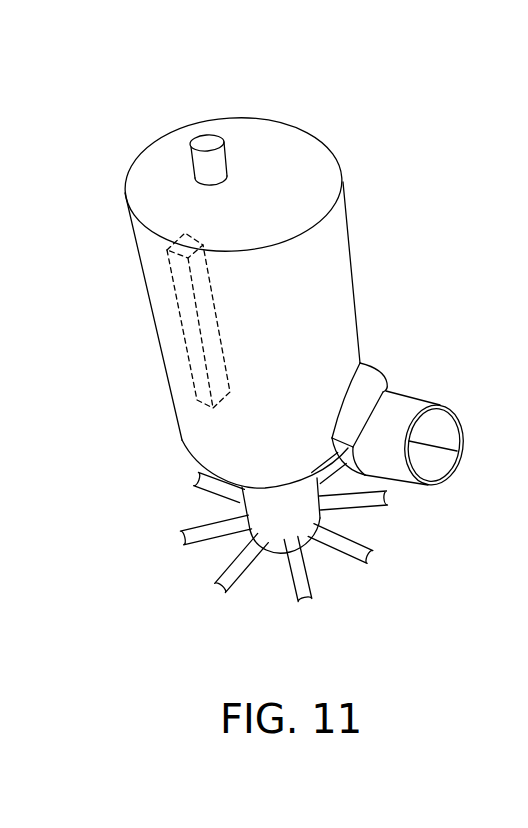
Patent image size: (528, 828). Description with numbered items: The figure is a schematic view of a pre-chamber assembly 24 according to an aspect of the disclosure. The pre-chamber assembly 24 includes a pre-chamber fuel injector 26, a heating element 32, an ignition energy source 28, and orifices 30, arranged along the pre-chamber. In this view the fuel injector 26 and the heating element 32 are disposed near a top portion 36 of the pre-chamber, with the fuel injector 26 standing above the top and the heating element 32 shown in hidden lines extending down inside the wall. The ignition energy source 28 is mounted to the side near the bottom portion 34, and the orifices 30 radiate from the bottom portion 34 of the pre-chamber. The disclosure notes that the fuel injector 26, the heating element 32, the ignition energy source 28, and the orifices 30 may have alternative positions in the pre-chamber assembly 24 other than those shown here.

The pre-chamber assembly 24 is at (345, 84).
The pre-chamber fuel injector 26 is at (207, 143).
The ignition energy source 28 is at (442, 428).
The orifices 30 is at (357, 550).
The heating element 32 is at (170, 270).
The bottom portion 34 is at (181, 480).
The top portion 36 is at (365, 163).